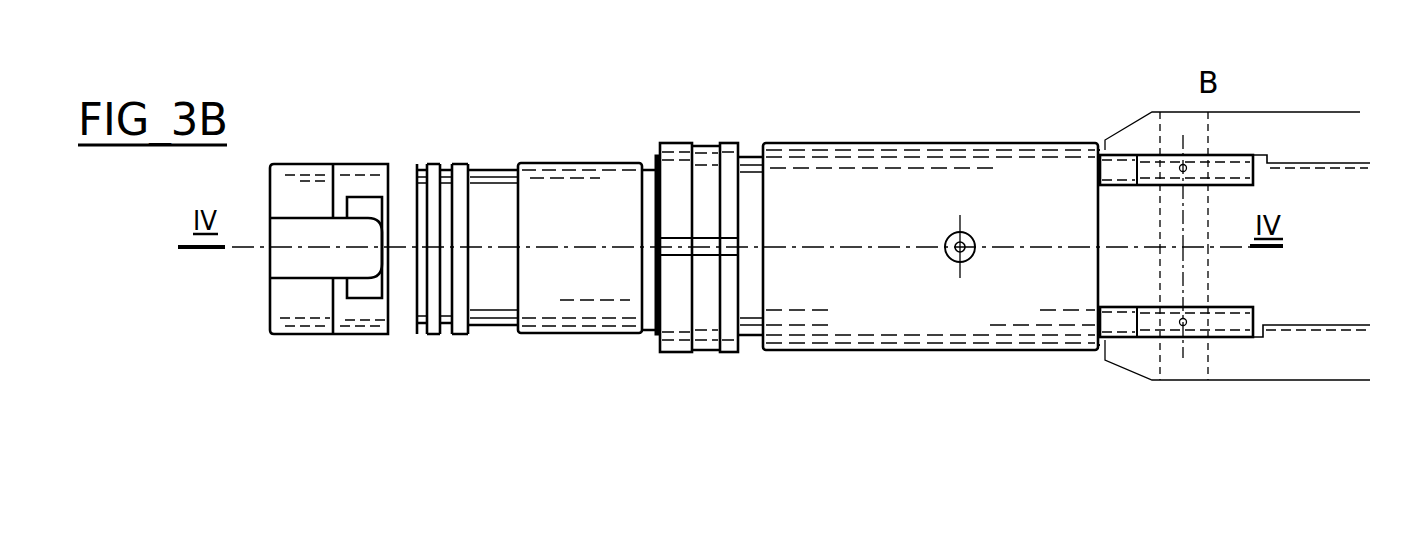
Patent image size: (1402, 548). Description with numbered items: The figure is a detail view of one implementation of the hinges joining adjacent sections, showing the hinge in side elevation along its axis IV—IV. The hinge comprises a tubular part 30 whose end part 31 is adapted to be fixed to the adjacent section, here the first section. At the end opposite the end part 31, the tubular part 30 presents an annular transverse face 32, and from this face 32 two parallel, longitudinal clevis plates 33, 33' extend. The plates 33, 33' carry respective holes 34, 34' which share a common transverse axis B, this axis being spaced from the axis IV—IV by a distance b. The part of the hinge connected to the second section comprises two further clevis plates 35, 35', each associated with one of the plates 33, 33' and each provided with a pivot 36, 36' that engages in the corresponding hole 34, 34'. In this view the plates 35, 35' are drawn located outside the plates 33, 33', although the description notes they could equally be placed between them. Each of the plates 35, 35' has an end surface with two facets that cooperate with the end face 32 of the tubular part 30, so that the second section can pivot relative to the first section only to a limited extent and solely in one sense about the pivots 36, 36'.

The tubular part 30 is at (888, 170).
The end part 31 is at (361, 177).
The annular transverse face 32 is at (1105, 147).
The clevis plate 33 is at (1235, 308).
The clevis plate 33' is at (1248, 177).
The hole 34 is at (1225, 302).
The hole 34' is at (1212, 191).
The clevis plate 35 is at (1237, 382).
The clevis plate 35' is at (1240, 96).
The pivot 36 is at (1144, 332).
The pivot 36' is at (1206, 144).